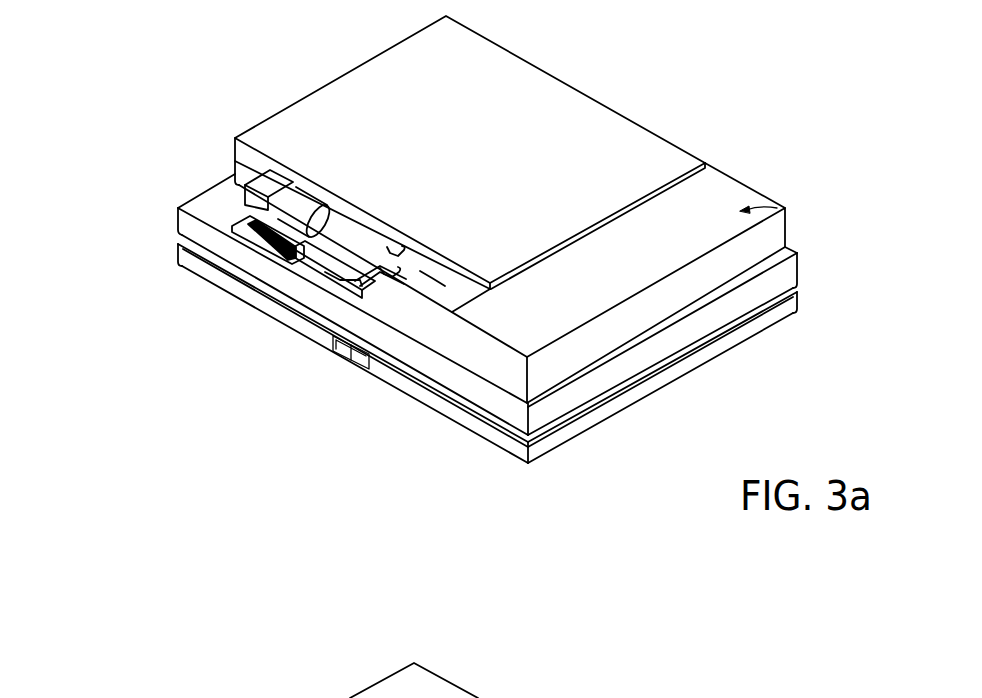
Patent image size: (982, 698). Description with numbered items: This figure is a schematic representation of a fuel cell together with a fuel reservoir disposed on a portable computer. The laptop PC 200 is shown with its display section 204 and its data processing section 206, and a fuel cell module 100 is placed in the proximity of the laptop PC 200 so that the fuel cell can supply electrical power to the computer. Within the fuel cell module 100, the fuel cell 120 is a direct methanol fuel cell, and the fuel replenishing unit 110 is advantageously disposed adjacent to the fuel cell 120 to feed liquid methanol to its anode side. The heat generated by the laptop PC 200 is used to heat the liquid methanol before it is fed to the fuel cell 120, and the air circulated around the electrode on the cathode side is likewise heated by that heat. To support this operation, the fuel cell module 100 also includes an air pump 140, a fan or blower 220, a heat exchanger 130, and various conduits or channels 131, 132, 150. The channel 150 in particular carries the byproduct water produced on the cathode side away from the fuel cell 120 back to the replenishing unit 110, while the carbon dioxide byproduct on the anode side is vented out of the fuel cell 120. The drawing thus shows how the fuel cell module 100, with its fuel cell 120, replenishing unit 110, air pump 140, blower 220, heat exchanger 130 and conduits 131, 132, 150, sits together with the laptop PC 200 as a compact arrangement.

The fuel cell module 100 is at (302, 68).
The fuel replenishing unit 110 is at (720, 192).
The fuel cell 120 is at (562, 107).
The heat exchanger 130 is at (325, 240).
The conduit 131 is at (388, 262).
The conduit 132 is at (370, 290).
The air pump 140 is at (280, 204).
The channel 150 is at (432, 278).
The laptop PC 200 is at (810, 275).
The display section 204 is at (280, 312).
The data processing section 206 is at (710, 325).
The fan or blower 220 is at (262, 237).